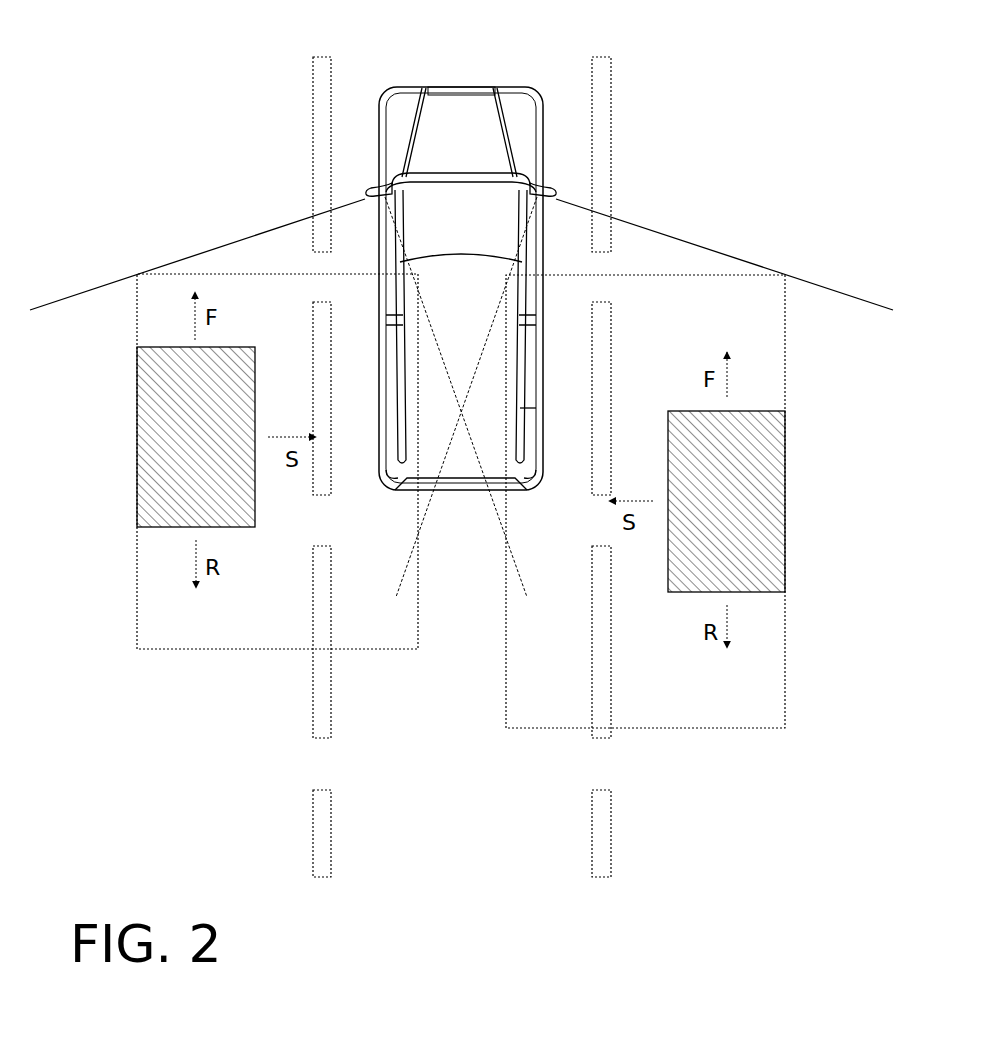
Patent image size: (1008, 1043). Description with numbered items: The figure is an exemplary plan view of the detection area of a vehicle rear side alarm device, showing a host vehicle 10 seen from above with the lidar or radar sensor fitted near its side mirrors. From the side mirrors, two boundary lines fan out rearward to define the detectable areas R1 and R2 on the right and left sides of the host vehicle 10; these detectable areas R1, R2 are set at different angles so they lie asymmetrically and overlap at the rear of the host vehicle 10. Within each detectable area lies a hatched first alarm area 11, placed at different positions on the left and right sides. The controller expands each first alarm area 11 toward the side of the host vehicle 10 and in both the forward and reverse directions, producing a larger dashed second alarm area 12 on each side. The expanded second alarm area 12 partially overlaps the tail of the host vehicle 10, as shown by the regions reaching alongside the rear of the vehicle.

The host vehicle 10 is at (458, 86).
The first alarm area 11 is at (147, 440).
The second alarm area 12 is at (137, 583).
The detectable area R1 is at (657, 230).
The detectable area R2 is at (266, 230).